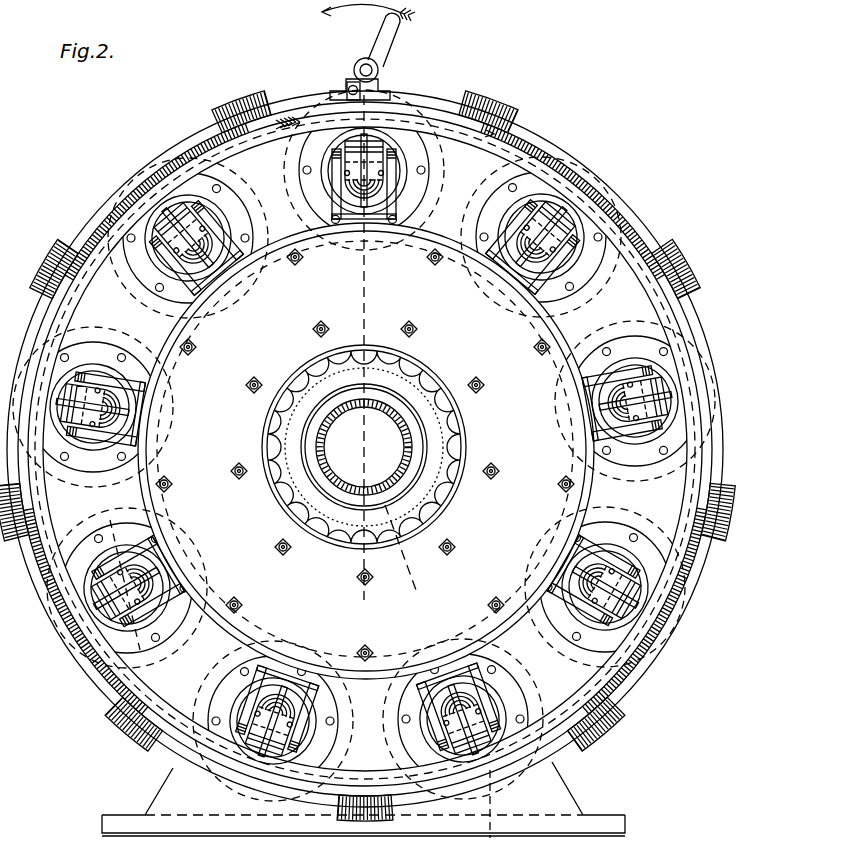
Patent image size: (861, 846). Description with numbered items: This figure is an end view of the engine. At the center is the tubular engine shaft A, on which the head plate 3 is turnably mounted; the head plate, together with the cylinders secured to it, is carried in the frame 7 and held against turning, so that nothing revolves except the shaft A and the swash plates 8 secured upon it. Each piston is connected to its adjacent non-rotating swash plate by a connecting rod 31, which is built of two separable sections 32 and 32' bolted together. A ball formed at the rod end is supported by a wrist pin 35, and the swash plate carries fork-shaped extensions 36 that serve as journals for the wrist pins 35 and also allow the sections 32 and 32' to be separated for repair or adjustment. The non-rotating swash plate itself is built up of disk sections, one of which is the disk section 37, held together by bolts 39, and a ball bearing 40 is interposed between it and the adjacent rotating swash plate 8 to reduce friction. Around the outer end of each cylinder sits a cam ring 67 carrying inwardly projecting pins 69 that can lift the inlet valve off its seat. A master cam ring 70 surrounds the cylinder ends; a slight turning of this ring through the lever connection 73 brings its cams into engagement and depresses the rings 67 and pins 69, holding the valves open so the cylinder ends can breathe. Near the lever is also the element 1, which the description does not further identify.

The bracket 1 is at (360, 62).
The head plate 3 is at (365, 448).
The frame 7 is at (363, 800).
The swash plate 8 is at (364, 442).
The connecting rod 31 is at (364, 452).
The connecting rod section 32 is at (127, 588).
The connecting rod section 32' is at (161, 585).
The wrist pin 35 is at (632, 543).
The fork-shaped extension 36 is at (240, 227).
The disk section 37 is at (366, 387).
The bolt 39 is at (318, 326).
The ball bearing 40 is at (420, 378).
The cam ring 67 is at (428, 182).
The pin 69 is at (121, 356).
The master cam ring 70 is at (206, 150).
The lever connection 73 is at (381, 49).
The engine shaft A is at (373, 481).